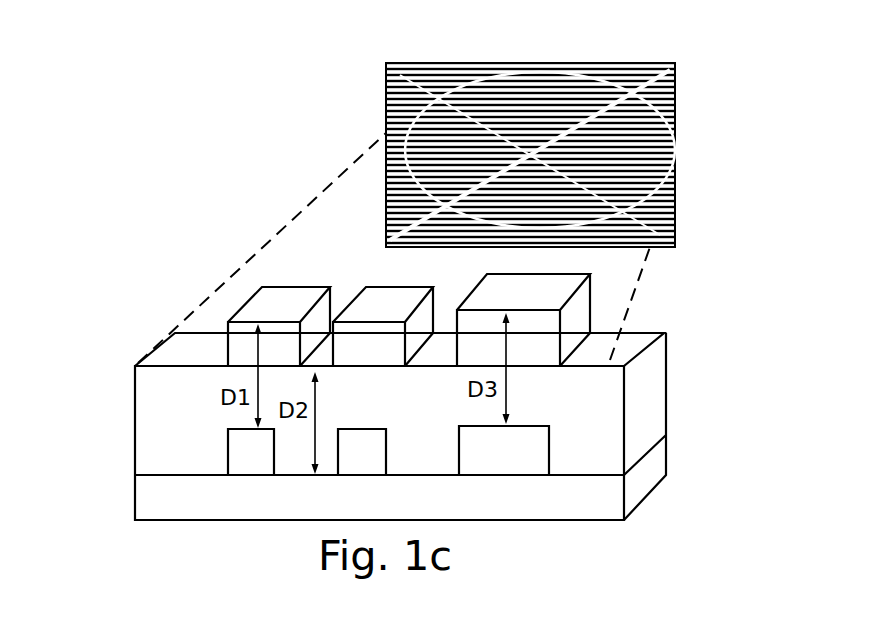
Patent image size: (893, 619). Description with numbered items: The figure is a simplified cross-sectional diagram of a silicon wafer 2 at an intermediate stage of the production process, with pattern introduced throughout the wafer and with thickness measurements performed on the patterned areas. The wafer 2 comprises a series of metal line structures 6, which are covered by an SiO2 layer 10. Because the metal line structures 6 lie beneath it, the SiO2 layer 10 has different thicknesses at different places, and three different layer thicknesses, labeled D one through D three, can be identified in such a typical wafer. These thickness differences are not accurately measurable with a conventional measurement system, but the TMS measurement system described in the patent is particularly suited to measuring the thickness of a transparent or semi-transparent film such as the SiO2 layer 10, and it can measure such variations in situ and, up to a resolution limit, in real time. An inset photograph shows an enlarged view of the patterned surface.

The wafer 2 is at (681, 463).
The metal line structures 6 is at (222, 447).
The SiO2 layer 10 is at (136, 365).